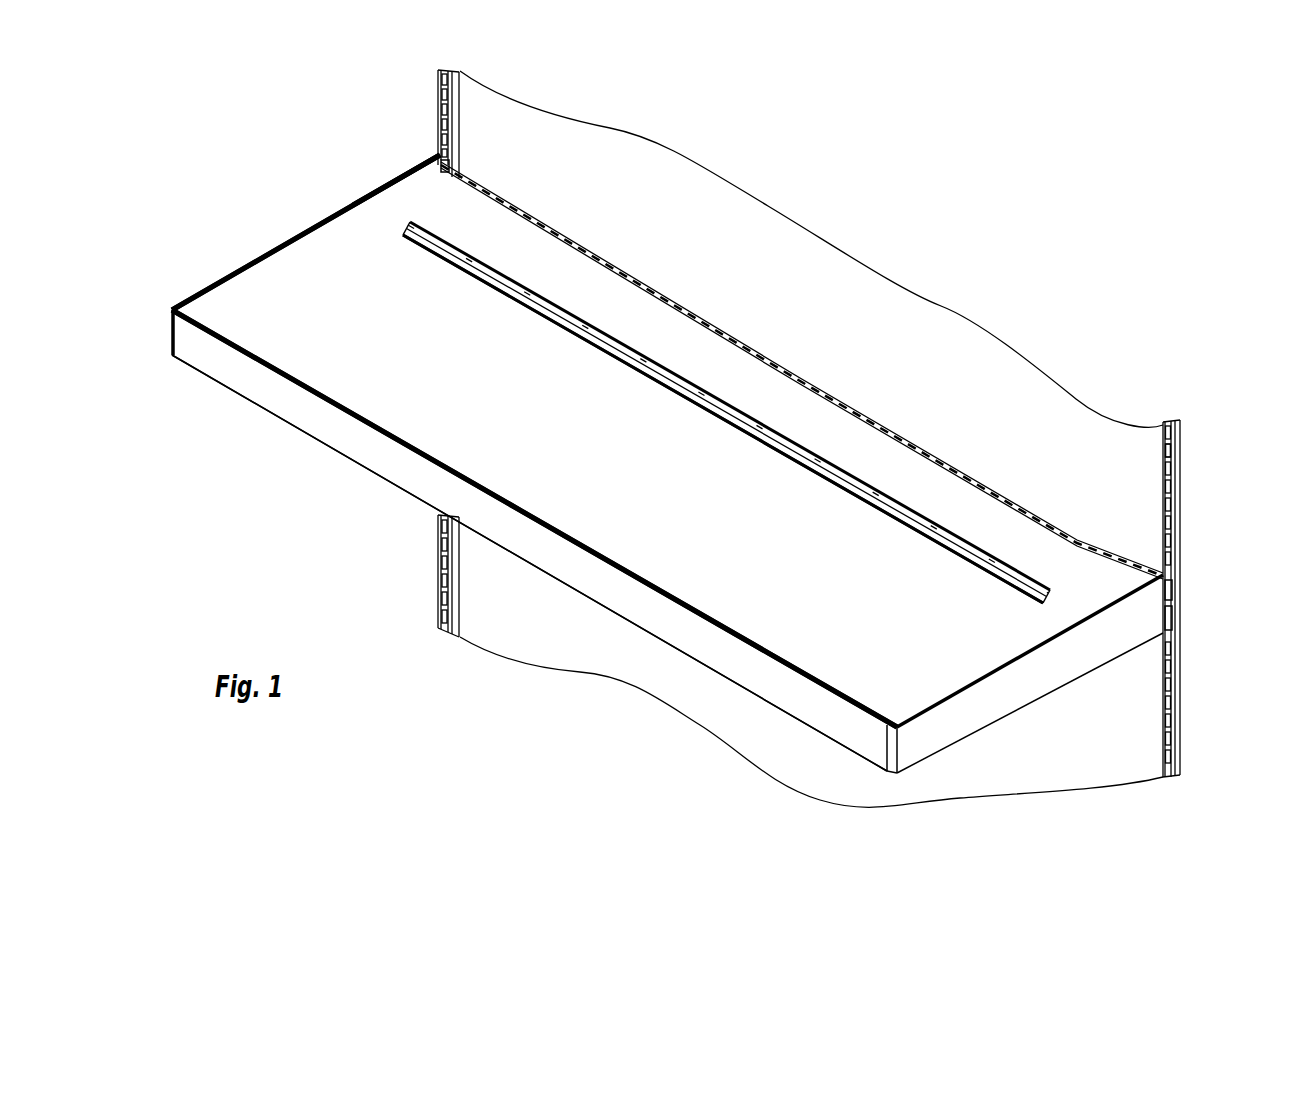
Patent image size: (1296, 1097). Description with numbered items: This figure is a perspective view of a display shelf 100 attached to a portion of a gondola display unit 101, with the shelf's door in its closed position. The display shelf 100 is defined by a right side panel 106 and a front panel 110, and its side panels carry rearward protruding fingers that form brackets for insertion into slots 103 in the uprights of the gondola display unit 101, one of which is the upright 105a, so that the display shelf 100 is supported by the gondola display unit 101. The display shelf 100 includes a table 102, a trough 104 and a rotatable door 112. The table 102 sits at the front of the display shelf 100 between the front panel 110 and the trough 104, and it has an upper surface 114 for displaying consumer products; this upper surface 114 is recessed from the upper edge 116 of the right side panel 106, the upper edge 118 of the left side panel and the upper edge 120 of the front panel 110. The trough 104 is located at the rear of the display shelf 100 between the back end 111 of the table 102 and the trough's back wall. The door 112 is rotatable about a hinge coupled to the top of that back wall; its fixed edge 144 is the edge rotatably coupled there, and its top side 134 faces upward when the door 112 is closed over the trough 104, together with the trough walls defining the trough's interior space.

The display shelf 100 is at (952, 214).
The gondola display unit 101 is at (1192, 711).
The table 102 is at (353, 193).
The slots 103 is at (444, 172).
The trough 104 is at (430, 150).
The upright 105a is at (1174, 456).
The right side panel 106 is at (1010, 685).
The front panel 110 is at (636, 595).
The back end of table 111 is at (690, 399).
The door 112 is at (784, 390).
The upper surface 114 is at (393, 385).
The upper edge of right side panel 116 is at (960, 688).
The upper edge of left side panel 118 is at (302, 237).
The upper edge of front panel 120 is at (665, 592).
The top side of door 134 is at (655, 340).
The fixed edge of door 144 is at (884, 426).